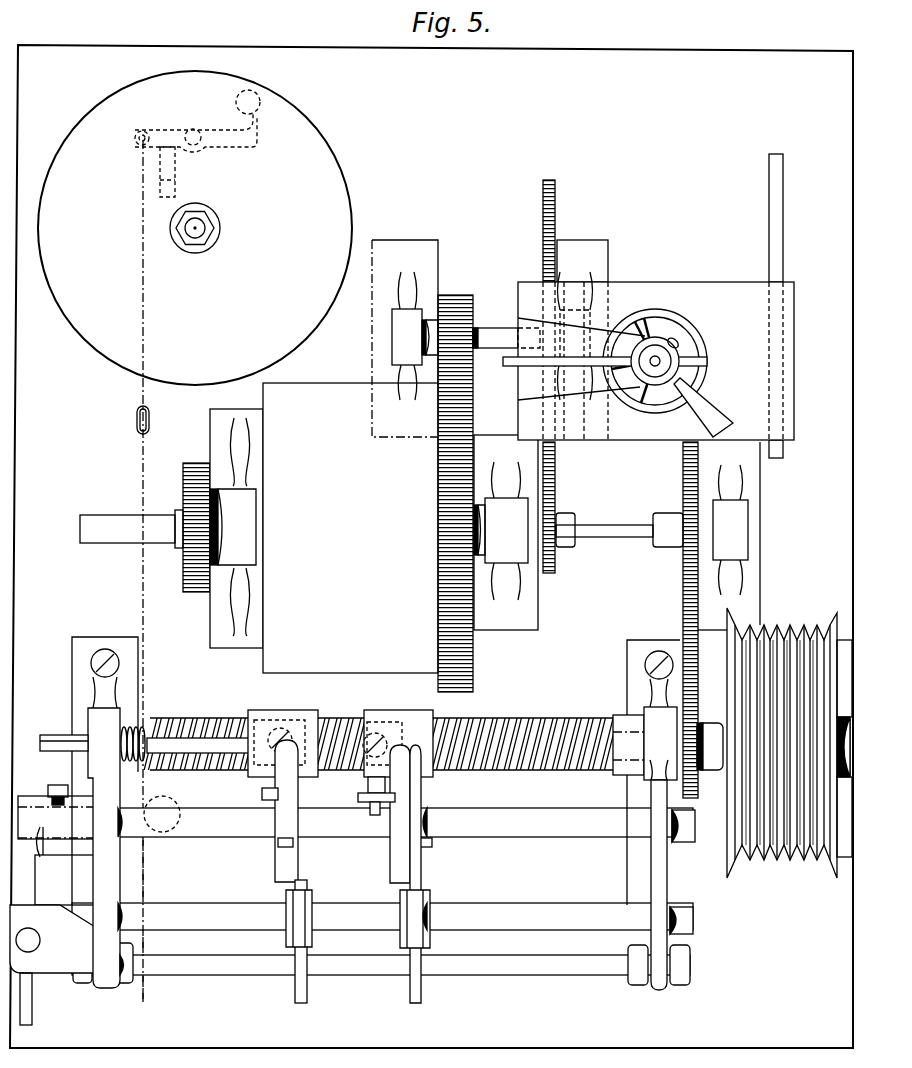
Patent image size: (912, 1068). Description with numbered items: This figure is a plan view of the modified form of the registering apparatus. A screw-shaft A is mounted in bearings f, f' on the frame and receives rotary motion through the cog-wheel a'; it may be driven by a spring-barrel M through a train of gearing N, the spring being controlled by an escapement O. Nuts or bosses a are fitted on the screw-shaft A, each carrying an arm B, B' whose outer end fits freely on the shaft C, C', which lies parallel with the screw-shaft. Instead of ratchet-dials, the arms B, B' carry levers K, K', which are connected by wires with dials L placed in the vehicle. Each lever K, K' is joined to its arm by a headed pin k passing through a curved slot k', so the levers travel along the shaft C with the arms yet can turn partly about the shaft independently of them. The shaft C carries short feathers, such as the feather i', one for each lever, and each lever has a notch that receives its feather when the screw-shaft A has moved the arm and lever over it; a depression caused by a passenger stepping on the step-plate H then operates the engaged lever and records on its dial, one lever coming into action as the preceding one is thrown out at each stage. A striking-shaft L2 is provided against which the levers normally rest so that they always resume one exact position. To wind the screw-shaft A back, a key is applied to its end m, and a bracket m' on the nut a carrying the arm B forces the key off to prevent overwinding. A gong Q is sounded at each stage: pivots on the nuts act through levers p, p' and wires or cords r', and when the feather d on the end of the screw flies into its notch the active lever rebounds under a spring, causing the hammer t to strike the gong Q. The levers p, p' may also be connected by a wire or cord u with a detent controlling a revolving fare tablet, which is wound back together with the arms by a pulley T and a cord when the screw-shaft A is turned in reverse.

The gong Q is at (195, 228).
The hammer t is at (197, 143).
The wires or cords r' is at (139, 434).
The spring-barrel M is at (350, 528).
The gearing N is at (568, 546).
The escapement O is at (648, 356).
The pulley T is at (782, 743).
The screw-shaft A is at (381, 733).
The nut or boss a is at (340, 743).
The cog-wheel a' is at (710, 762).
The bearing f is at (646, 815).
The bearing f' is at (105, 812).
The end of shaft A m is at (64, 736).
The bracket m' is at (218, 746).
The lever p is at (262, 794).
The lever p' is at (370, 796).
The arm B is at (284, 811).
The arm B' is at (393, 814).
The shaft C is at (406, 825).
The shaft C' is at (117, 812).
The feather i' is at (350, 851).
The lever K is at (308, 934).
The lever K' is at (418, 874).
The headed pin k is at (299, 918).
The curved slot k' is at (415, 919).
The dial L is at (382, 918).
The striking-shaft L2 is at (381, 964).
The feather d is at (53, 866).
The wire or cord u is at (149, 921).
The step-plate H is at (59, 965).